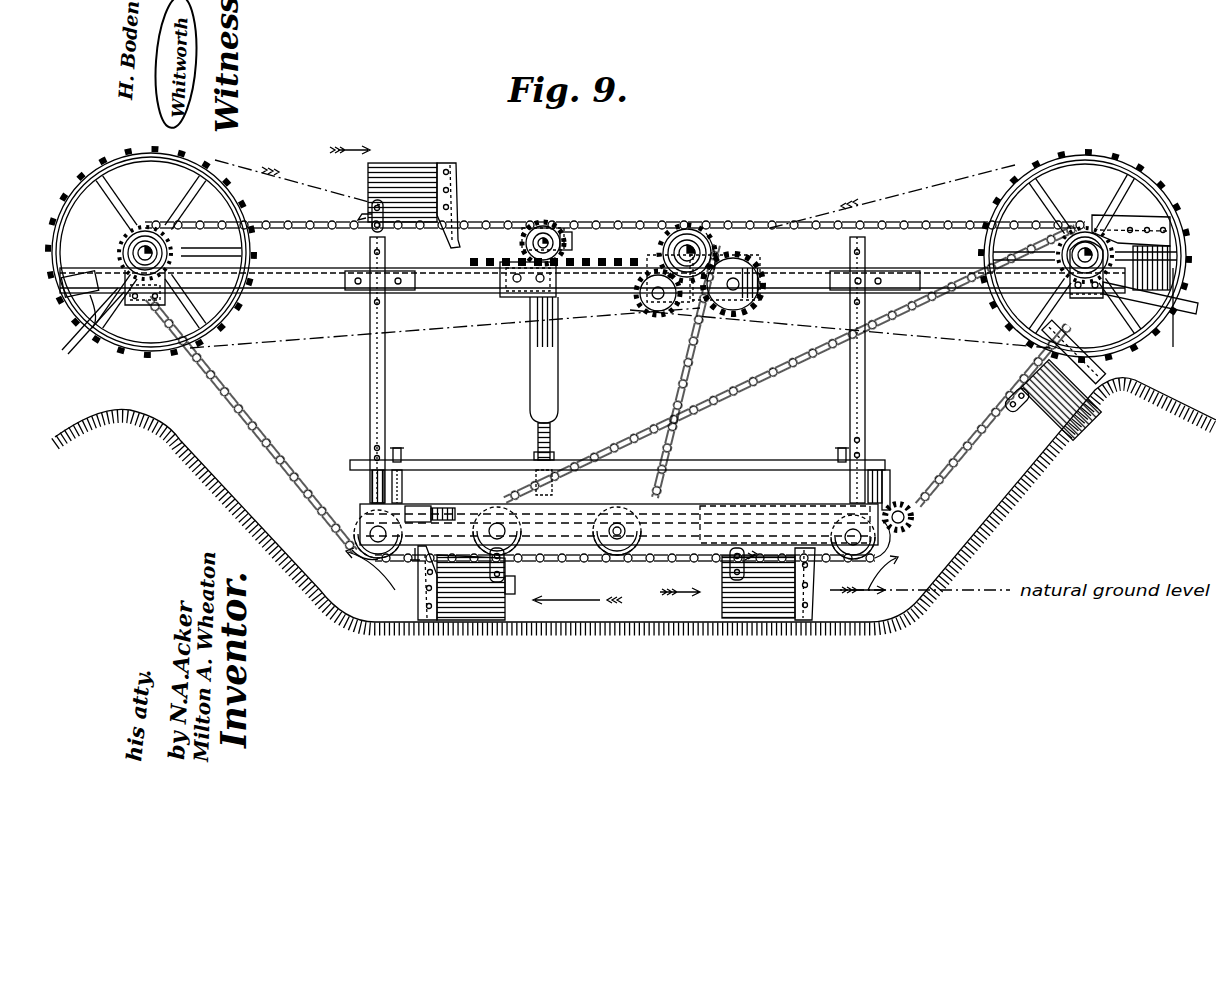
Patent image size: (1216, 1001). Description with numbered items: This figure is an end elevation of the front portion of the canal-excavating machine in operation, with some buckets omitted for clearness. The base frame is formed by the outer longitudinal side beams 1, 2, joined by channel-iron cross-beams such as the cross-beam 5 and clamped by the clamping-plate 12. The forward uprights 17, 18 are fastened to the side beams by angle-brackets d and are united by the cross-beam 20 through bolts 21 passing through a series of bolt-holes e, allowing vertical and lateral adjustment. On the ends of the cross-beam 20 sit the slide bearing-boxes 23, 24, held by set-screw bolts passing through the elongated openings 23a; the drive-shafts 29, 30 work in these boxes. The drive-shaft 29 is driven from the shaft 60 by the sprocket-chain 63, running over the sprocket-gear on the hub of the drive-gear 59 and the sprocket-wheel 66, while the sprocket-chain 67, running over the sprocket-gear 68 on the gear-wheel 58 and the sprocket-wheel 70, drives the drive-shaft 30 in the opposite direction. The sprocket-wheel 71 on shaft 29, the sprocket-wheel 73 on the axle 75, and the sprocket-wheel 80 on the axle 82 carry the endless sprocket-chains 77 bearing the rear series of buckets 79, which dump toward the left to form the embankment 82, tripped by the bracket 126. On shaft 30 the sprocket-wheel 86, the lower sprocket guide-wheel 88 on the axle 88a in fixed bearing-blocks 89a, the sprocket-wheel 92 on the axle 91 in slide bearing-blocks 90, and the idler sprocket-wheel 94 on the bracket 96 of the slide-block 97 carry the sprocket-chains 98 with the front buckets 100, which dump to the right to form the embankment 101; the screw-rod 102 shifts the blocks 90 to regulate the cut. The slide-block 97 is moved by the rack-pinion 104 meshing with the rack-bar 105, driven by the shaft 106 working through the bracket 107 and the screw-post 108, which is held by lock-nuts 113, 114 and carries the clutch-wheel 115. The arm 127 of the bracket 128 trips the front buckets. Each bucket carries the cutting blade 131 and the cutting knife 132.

The outer longitudinal side beam 1 is at (885, 470).
The outer longitudinal side beam 2 is at (368, 487).
The channel-iron cross-beam 5 is at (712, 508).
The clamping-plate 12 is at (487, 456).
The upright 17 is at (850, 400).
The upright 18 is at (386, 403).
The cross-beam 20 is at (900, 272).
The bolt 21 is at (380, 288).
The slide bearing-box 23 is at (1090, 300).
The elongated opening 23a is at (175, 283).
The slide bearing-box 24 is at (150, 304).
The drive-shaft 29 is at (1075, 255).
The drive-shaft 30 is at (135, 247).
The gear-wheel 58 is at (660, 310).
The drive-gear 59 is at (733, 314).
The shaft 60 is at (728, 268).
The sprocket-chain 63 is at (840, 256).
The sprocket-wheel 66 is at (1088, 152).
The sprocket-chain 67 is at (445, 252).
The sprocket-gear 68 is at (650, 308).
The sprocket-wheel 70 is at (118, 165).
The sprocket-wheel 71 is at (1088, 237).
The sprocket-wheel 73 is at (850, 556).
The axle 75 is at (898, 532).
The sprocket-chain 77 is at (700, 402).
The bucket 79 is at (1025, 437).
The sprocket-wheel 80 is at (619, 524).
The axle / embankment 82 is at (495, 522).
The sprocket-wheel 86 is at (168, 249).
The sprocket guide-wheel 88 is at (355, 535).
The axle 88a is at (359, 574).
The fixed bearing-block 89a is at (416, 508).
The slide bearing-block 90 is at (615, 520).
The axle 91 is at (640, 505).
The sprocket-wheel 92 is at (633, 564).
The idler sprocket-wheel 94 is at (697, 240).
The shaft or bracket 96 is at (716, 256).
The slide-block 97 is at (645, 300).
The sprocket-chain 98 is at (612, 224).
The bucket 100 is at (420, 159).
The embankment 101 is at (143, 410).
The screw-rod 102 is at (415, 562).
The rack-pinion 104 is at (522, 240).
The rack-bar 105 is at (600, 258).
The shaft 106 is at (568, 228).
The bracket 107 is at (522, 298).
The screw-post 108 is at (538, 380).
The lock-nut 113 is at (552, 455).
The lock-nut 114 is at (538, 472).
The clutch-wheel 115 is at (545, 222).
The bracket 126 is at (1194, 308).
The arm 127 is at (86, 307).
The bracket 128 is at (91, 326).
The cutting blade 131 is at (456, 170).
The cutting knife 132 is at (456, 215).
The angle-bracket d is at (398, 450).
The bolt-hole e is at (358, 288).